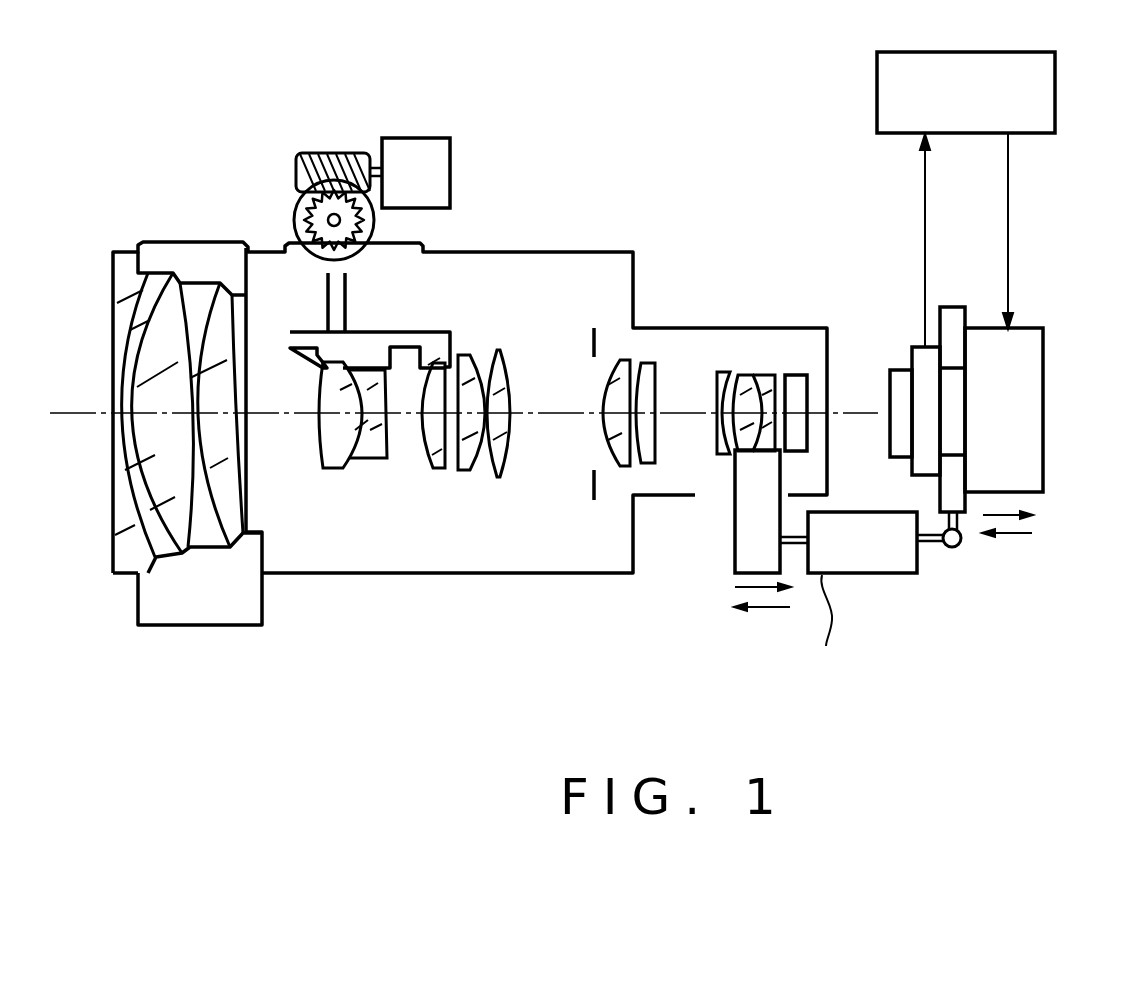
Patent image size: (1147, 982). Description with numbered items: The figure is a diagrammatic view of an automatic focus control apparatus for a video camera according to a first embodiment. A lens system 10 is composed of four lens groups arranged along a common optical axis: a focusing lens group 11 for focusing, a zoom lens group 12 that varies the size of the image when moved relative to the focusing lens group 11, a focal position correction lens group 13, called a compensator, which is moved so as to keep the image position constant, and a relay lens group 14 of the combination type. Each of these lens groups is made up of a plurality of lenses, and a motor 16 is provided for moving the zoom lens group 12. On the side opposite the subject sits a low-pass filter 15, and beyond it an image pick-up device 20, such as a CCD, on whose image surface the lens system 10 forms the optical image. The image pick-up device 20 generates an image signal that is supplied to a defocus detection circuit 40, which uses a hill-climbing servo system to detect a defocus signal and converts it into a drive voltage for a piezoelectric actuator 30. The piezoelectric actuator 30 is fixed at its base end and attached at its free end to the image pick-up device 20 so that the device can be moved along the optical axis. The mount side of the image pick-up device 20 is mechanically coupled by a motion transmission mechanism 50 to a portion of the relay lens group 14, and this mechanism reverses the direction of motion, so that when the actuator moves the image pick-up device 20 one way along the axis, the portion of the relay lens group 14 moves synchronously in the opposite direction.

The lens system 10 is at (165, 238).
The focusing lens group 11 is at (95, 640).
The zoom lens group 12 is at (320, 488).
The focal position correction lens group 13 is at (458, 488).
The relay lens group 14 is at (608, 358).
The low-pass filter 15 is at (798, 383).
The motor 16 is at (428, 138).
The image pick-up device 20 is at (918, 362).
The piezoelectric actuator 30 is at (1045, 376).
The defocus detection circuit 40 is at (1057, 78).
The motion transmission mechanism 50 is at (900, 575).